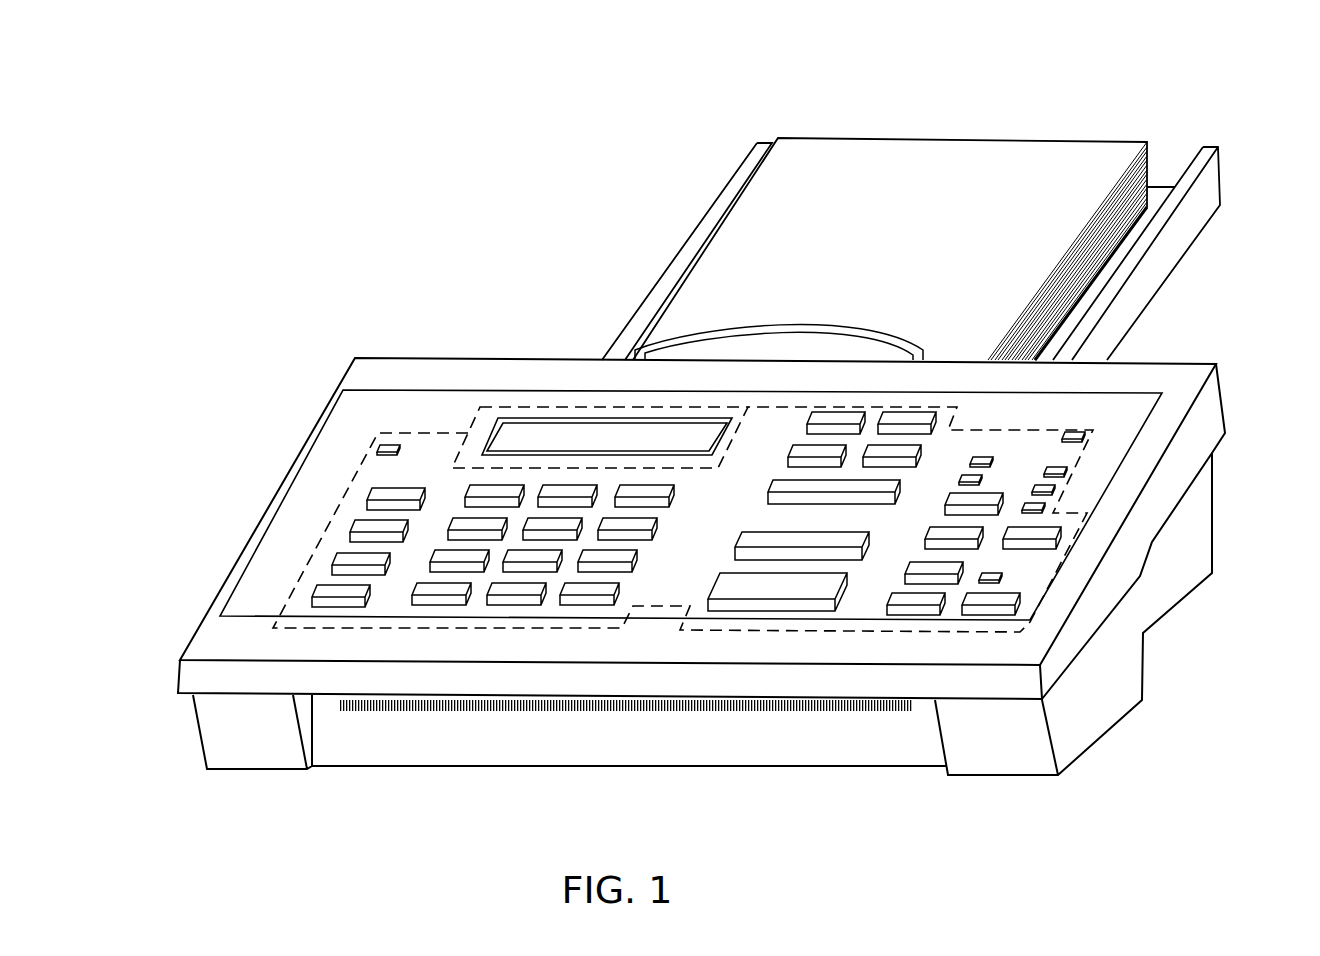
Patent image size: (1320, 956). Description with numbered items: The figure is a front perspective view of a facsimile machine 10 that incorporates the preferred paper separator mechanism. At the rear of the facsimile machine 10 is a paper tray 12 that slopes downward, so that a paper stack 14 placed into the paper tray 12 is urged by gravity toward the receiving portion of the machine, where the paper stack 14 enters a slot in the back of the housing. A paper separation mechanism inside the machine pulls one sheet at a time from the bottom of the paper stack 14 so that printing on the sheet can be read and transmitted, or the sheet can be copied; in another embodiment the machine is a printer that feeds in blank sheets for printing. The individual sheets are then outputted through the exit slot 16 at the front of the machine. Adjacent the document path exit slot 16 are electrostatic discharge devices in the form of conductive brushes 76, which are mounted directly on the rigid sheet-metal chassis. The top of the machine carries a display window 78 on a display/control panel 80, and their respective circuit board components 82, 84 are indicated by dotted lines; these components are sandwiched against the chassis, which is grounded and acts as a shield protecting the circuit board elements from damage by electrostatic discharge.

The facsimile machine 10 is at (1178, 102).
The paper tray 12 is at (1163, 190).
The paper stack 14 is at (965, 153).
The exit slot 16 is at (328, 705).
The conductive brushes 76 is at (605, 708).
The display window 78 is at (517, 432).
The display/control panel 80 is at (953, 465).
The circuit board components 82 is at (592, 407).
The circuit board components 84 is at (302, 537).